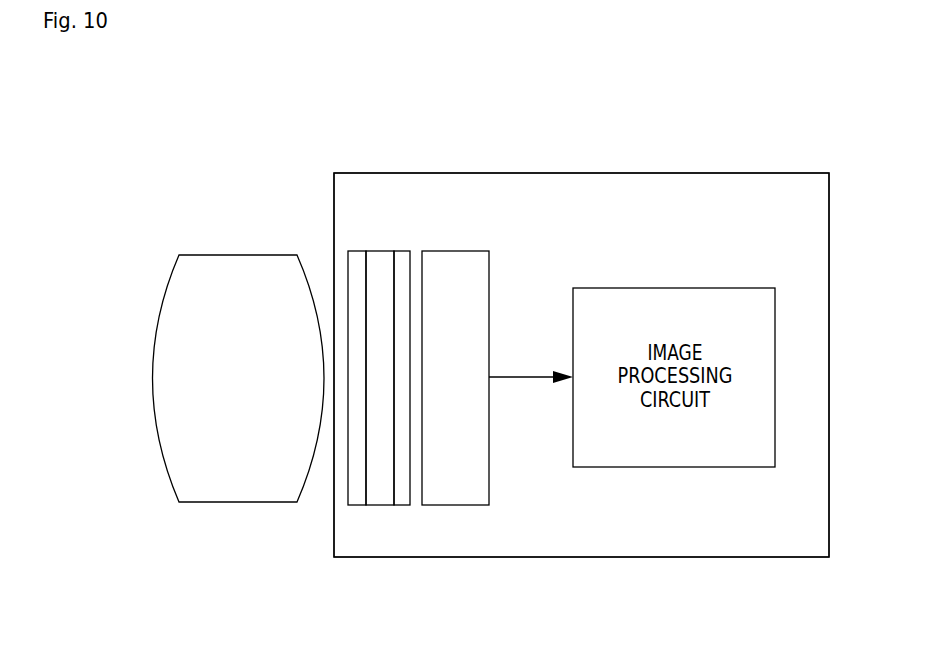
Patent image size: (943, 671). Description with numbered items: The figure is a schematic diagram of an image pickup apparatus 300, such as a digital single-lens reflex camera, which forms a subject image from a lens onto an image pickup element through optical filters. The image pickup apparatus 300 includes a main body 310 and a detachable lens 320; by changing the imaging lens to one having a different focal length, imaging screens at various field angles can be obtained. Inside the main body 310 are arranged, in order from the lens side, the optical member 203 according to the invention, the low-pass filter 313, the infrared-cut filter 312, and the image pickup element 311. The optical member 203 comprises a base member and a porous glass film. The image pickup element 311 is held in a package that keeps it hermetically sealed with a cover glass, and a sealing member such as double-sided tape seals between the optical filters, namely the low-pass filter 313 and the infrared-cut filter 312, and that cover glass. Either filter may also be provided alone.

The image pickup apparatus 300 is at (380, 134).
The main body 310 is at (548, 172).
The detachable lens 320 is at (240, 267).
The optical member 203 is at (357, 262).
The low-pass filter 313 is at (380, 258).
The infrared-cut filter 312 is at (404, 259).
The image pickup element 311 is at (467, 259).